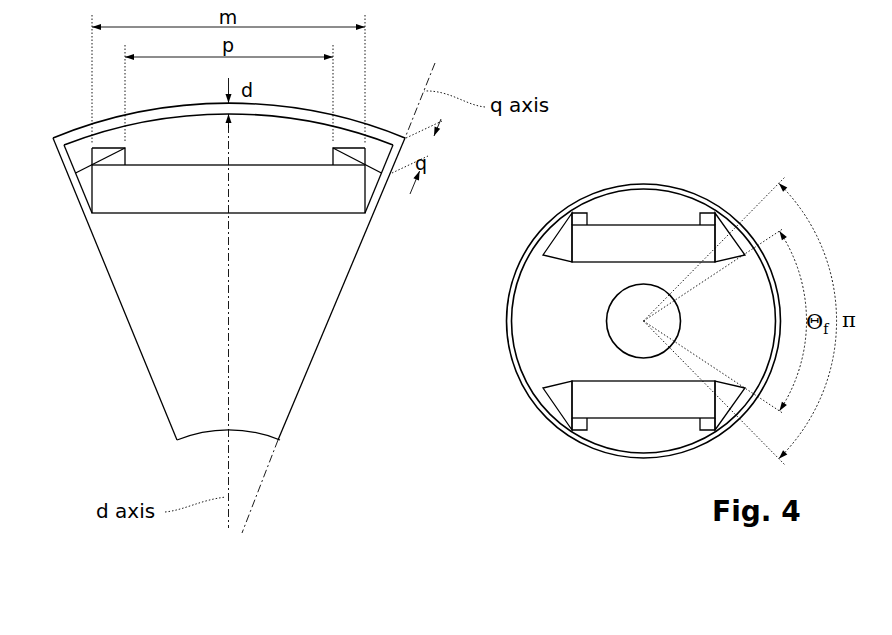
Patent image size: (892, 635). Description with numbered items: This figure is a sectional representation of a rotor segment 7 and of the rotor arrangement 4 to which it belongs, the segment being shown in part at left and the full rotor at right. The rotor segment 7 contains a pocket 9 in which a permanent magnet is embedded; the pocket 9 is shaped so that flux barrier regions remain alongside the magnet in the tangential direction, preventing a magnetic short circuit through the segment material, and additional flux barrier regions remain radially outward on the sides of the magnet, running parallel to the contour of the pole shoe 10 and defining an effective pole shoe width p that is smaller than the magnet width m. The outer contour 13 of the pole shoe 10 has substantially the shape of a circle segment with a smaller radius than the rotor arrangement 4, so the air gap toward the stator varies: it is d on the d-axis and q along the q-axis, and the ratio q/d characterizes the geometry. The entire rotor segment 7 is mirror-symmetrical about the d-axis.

The rotor arrangement 4 is at (187, 107).
The rotor segment 7 is at (135, 312).
The pocket 9 is at (374, 218).
The pole shoe 10 is at (640, 440).
The outer contour 13 is at (305, 117).